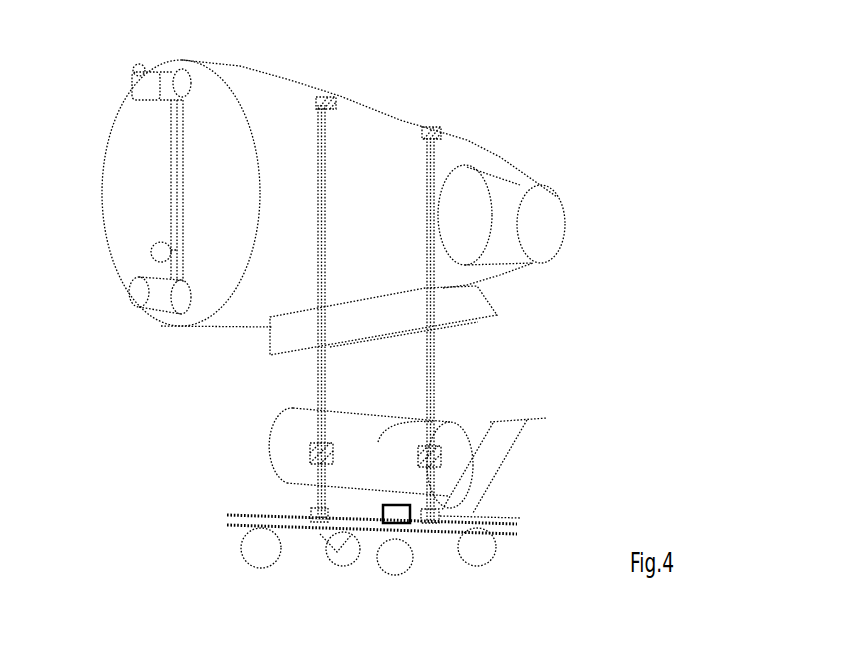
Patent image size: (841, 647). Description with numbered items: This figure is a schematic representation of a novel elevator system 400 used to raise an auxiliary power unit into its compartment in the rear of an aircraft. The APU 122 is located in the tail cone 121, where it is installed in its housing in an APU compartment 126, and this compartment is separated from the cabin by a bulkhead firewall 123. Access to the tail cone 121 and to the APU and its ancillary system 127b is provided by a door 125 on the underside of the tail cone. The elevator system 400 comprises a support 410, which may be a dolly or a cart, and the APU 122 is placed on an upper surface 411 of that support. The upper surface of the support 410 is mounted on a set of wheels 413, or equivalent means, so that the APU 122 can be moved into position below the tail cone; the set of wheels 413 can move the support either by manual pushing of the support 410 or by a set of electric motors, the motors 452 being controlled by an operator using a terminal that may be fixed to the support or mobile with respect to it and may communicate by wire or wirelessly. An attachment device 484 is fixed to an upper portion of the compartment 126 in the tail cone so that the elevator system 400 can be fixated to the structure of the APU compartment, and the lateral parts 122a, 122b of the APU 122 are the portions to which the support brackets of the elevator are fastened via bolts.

The bulkhead firewall 123 is at (148, 173).
The attachment device 484 is at (323, 97).
The tail cone 121 is at (441, 137).
The APU compartment 126 is at (458, 152).
The ancillary system 127b is at (507, 185).
The door 125 is at (472, 305).
The elevator system 400 is at (458, 357).
The APU 122 is at (297, 414).
The lateral part of the APU 122a is at (300, 452).
The lateral part of the APU 122b is at (422, 411).
The support 410 is at (464, 569).
The upper surface 411 is at (367, 535).
The set of wheels 413 is at (337, 550).
The motors 452 is at (407, 523).